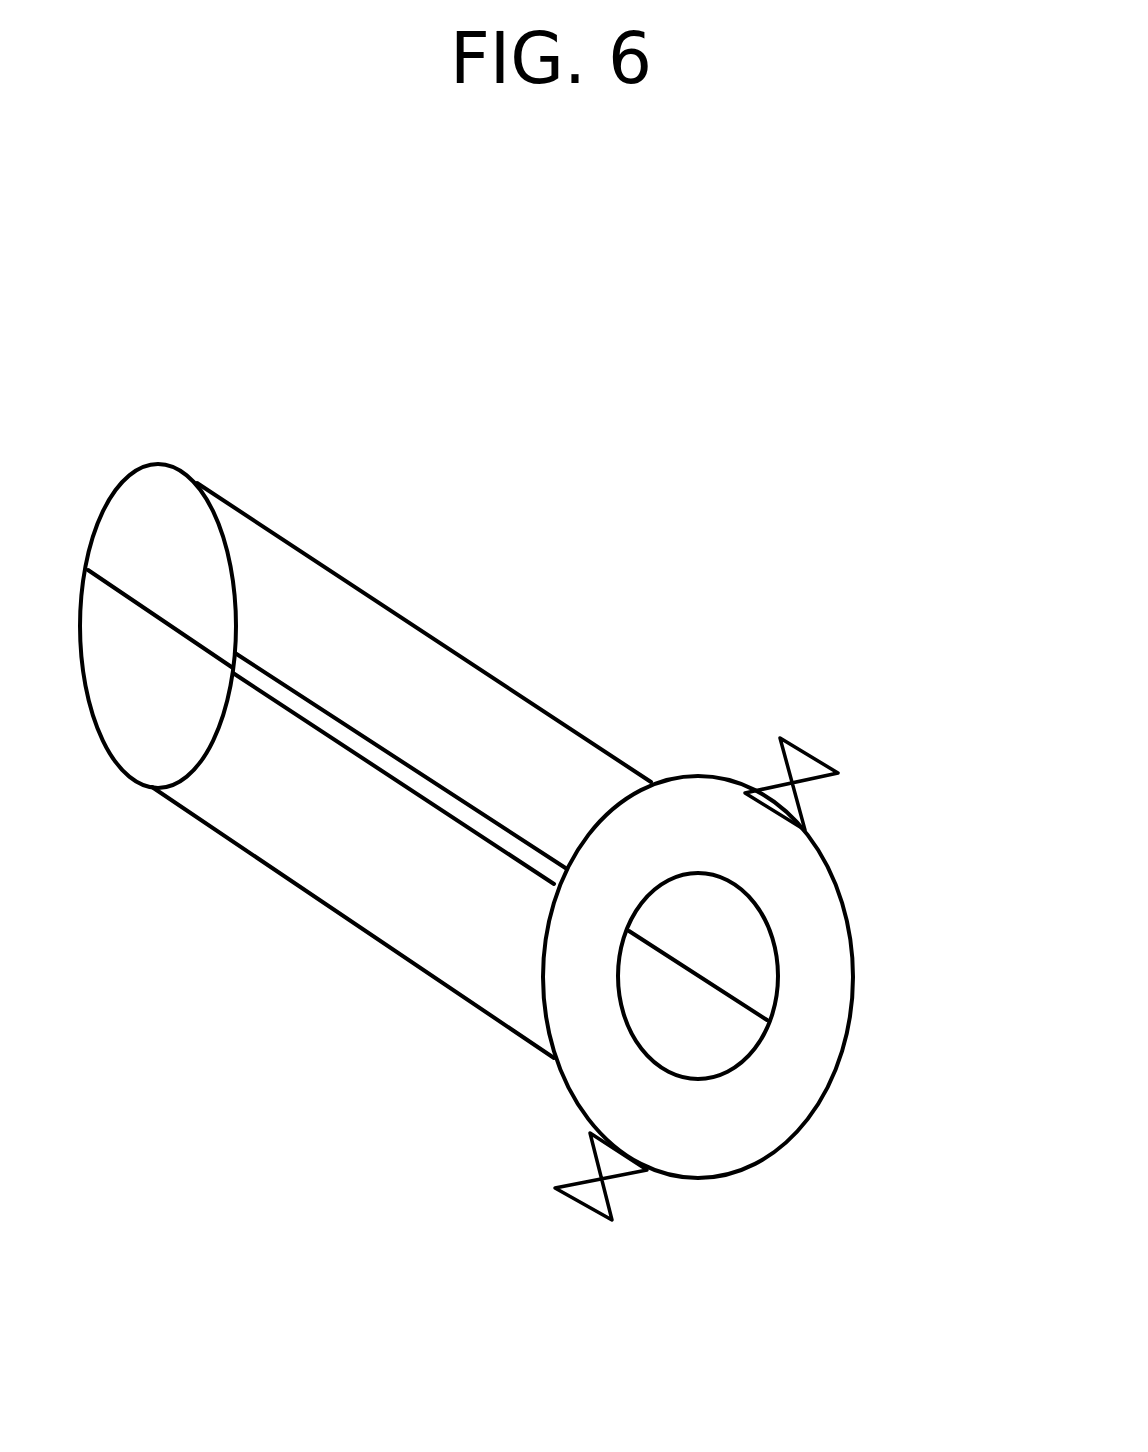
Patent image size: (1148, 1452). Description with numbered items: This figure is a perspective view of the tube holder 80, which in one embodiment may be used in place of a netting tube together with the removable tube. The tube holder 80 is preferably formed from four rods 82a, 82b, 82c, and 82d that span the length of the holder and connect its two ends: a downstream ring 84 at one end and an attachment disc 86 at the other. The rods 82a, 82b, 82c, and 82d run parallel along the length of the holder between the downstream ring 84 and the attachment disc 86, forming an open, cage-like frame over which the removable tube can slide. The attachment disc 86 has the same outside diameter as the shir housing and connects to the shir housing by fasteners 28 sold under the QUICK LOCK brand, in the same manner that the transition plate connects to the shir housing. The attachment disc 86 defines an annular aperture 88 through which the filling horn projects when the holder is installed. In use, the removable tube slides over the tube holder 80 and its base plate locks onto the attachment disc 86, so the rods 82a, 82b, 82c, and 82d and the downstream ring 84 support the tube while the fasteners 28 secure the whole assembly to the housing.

The tube holder 80 is at (452, 573).
The downstream ring 84 is at (157, 465).
The rod 82a is at (305, 550).
The rod 82b is at (290, 683).
The rod 82c is at (270, 872).
The rod 82d is at (418, 800).
The attachment disc 86 is at (680, 800).
The annular aperture 88 is at (753, 943).
The fasteners 28 is at (803, 767).